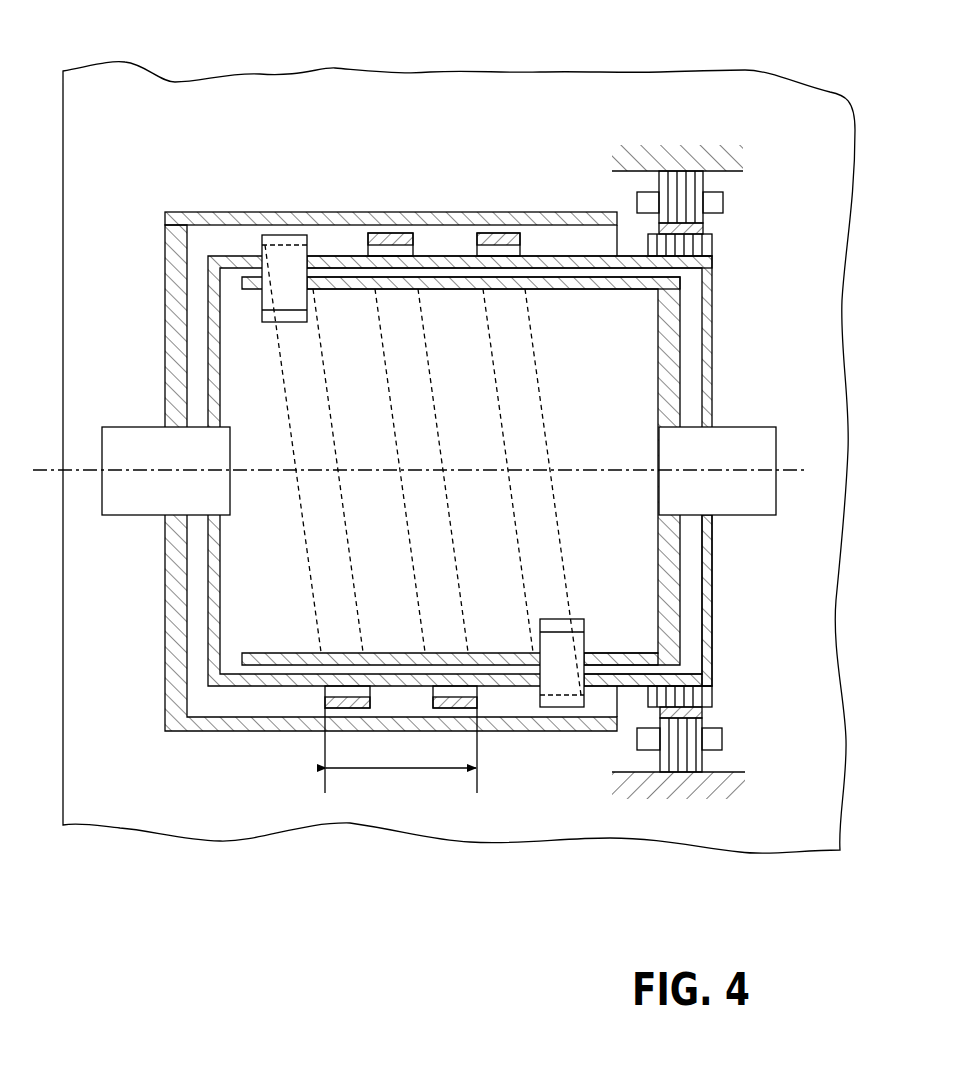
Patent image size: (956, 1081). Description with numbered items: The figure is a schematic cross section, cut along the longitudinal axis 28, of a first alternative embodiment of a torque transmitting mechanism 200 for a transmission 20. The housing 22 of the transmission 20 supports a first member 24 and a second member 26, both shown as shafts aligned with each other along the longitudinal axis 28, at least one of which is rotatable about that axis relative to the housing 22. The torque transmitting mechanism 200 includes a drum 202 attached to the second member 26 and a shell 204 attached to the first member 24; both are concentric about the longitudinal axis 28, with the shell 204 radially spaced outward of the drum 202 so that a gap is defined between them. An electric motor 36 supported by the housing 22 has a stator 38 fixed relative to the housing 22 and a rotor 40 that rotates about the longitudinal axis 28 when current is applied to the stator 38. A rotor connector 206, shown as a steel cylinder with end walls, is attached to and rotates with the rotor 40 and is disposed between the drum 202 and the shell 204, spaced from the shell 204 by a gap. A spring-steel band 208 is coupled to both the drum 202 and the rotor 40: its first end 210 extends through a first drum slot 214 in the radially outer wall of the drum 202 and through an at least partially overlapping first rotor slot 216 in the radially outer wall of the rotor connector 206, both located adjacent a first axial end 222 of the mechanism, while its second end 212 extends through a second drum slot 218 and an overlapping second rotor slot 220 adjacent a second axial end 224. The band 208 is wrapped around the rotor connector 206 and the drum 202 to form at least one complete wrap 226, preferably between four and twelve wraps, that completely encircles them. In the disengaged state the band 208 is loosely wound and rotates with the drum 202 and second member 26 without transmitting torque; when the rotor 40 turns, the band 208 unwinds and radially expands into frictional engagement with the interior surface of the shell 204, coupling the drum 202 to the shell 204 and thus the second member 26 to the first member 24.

The transmission 20 is at (737, 85).
The housing 22 is at (805, 97).
The first member 24 is at (116, 432).
The second member 26 is at (740, 437).
The longitudinal axis 28 is at (92, 472).
The electric motor 36 is at (693, 207).
The stator 38 is at (660, 175).
The rotor 40 is at (712, 238).
The torque transmitting mechanism 200 is at (378, 188).
The drum 202 is at (245, 610).
The shell 204 is at (475, 212).
The rotor connector 206 is at (708, 290).
The band 208 is at (523, 380).
The first end 210 is at (280, 238).
The second end 212 is at (553, 697).
The first drum slot 214 is at (318, 290).
The first rotor slot 216 is at (325, 257).
The second drum slot 218 is at (597, 652).
The second rotor slot 220 is at (600, 687).
The first axial end 222 is at (163, 587).
The second axial end 224 is at (718, 572).
The complete wrap 226 is at (380, 771).